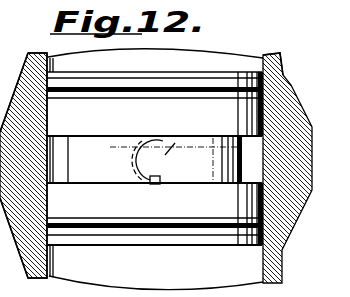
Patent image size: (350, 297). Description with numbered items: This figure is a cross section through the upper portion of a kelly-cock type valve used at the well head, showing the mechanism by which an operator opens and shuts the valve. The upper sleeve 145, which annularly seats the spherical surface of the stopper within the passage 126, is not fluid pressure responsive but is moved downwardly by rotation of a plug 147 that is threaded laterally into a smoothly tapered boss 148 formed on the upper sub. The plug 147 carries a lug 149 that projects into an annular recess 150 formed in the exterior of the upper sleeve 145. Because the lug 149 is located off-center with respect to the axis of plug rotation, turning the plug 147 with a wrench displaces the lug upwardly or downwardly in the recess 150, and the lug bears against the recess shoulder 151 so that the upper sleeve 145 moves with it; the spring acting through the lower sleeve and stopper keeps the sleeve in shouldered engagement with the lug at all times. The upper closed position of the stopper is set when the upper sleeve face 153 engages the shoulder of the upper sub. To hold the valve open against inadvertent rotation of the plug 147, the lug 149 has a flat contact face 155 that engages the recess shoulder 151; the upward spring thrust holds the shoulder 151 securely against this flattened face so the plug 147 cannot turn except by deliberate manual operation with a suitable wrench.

The boss 148 is at (291, 85).
The upper sleeve face 153 is at (128, 64).
The upper sleeve 145 is at (181, 113).
The annular recess 150 is at (64, 158).
The lug 149 is at (153, 177).
The plug 147 is at (175, 172).
The flat contact face 155 is at (157, 184).
The recess shoulder 151 is at (168, 150).
The passage 126 is at (169, 263).